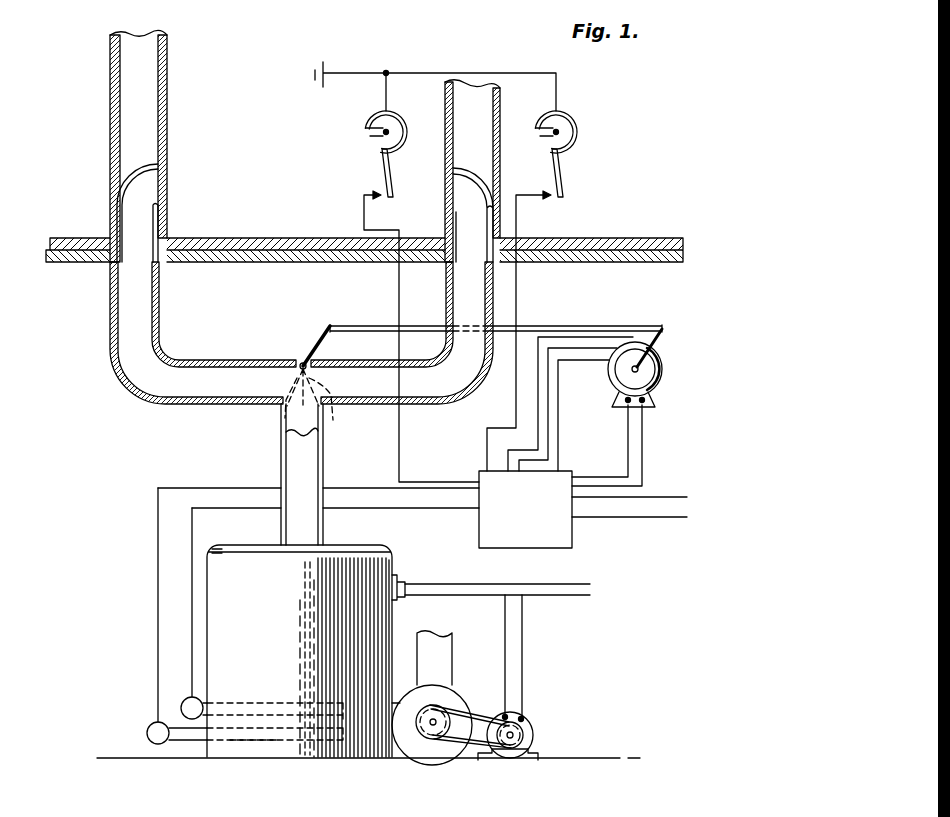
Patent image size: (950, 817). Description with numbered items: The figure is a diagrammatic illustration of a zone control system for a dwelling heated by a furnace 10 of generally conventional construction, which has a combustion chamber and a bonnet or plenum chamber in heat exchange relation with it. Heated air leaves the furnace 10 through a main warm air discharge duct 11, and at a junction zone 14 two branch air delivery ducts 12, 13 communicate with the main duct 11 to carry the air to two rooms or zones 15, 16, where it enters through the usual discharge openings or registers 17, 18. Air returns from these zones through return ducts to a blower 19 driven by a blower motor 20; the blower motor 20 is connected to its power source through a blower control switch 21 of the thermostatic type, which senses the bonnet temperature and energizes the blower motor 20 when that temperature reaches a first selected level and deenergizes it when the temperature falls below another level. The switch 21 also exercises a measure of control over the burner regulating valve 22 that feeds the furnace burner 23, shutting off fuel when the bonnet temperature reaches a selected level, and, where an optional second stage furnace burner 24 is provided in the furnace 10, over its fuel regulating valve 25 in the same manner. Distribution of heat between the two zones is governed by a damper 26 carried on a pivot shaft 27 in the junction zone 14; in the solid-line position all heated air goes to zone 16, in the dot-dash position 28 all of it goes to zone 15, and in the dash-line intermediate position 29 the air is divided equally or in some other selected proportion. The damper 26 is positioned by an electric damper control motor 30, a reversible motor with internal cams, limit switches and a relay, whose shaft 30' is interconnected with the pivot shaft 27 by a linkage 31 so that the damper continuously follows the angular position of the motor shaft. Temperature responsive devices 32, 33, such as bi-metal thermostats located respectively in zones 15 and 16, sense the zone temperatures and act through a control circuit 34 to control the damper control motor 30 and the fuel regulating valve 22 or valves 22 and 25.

The furnace 10 is at (372, 552).
The main warm air discharge duct 11 is at (322, 462).
The branch air delivery duct 12 is at (213, 373).
The branch air delivery duct 13 is at (348, 375).
The junction zone 14 is at (303, 350).
The zone 15 is at (299, 171).
The zone 16 is at (638, 136).
The discharge opening or register 17 is at (157, 188).
The discharge opening or register 18 is at (492, 194).
The blower 19 is at (413, 748).
The blower motor 20 is at (512, 762).
The blower control switch 21 is at (402, 578).
The burner regulating valve 22 is at (147, 733).
The furnace burner 23 is at (255, 742).
The second stage furnace burner 24 is at (335, 703).
The fuel regulating valve 25 is at (186, 698).
The damper 26 is at (294, 378).
The pivot shaft 27 is at (299, 362).
The second position of damper 28 is at (334, 404).
The intermediate position of damper 29 is at (285, 417).
The damper control motor 30 is at (634, 439).
The shaft of damper control motor 30' is at (607, 400).
The linkage 31 is at (578, 326).
The temperature responsive device 32 is at (367, 138).
The temperature responsive device 33 is at (566, 170).
The control circuit 34 is at (535, 550).